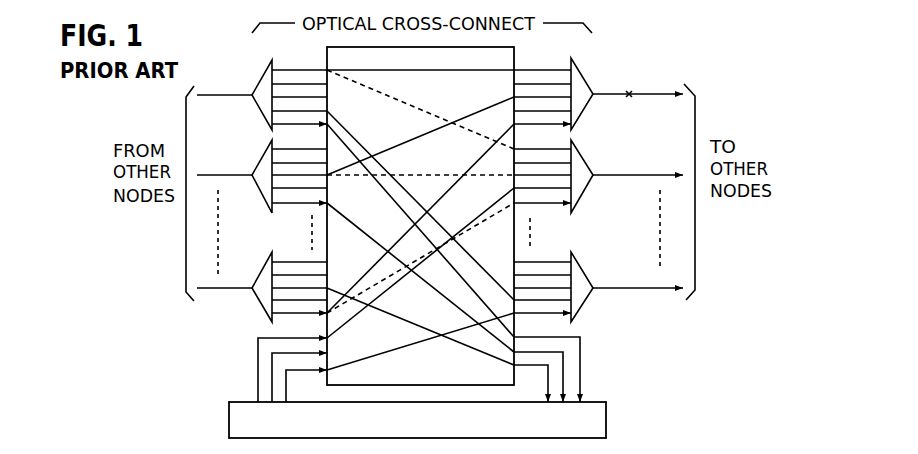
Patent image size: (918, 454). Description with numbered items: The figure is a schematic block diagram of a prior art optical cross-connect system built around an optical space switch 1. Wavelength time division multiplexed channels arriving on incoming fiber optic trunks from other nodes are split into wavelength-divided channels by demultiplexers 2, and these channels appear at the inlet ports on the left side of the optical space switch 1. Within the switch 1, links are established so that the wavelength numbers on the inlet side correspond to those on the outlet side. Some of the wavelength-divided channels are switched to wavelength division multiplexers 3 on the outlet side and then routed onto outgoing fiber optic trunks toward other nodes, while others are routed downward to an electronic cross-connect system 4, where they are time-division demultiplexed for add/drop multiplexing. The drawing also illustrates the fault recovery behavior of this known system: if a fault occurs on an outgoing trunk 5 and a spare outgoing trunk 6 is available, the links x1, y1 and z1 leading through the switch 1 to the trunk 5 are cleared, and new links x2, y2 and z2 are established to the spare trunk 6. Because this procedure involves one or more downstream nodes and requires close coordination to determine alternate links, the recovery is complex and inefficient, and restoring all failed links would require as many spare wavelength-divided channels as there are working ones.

The optical space switch 1 is at (423, 377).
The demultiplexer 2 is at (262, 78).
The wavelength division multiplexer 3 is at (583, 80).
The electronic cross-connect system 4 is at (606, 414).
The outgoing trunk 5 is at (651, 91).
The spare outgoing trunk 6 is at (637, 172).
The link x1 is at (450, 70).
The new link x2 is at (415, 106).
The link y1 is at (420, 136).
The new link y2 is at (405, 174).
The link z1 is at (370, 271).
The new link z2 is at (389, 279).